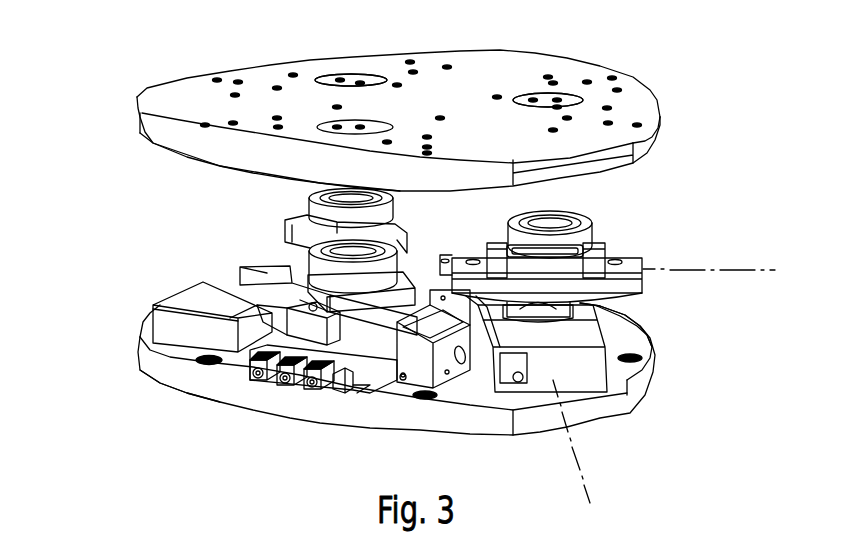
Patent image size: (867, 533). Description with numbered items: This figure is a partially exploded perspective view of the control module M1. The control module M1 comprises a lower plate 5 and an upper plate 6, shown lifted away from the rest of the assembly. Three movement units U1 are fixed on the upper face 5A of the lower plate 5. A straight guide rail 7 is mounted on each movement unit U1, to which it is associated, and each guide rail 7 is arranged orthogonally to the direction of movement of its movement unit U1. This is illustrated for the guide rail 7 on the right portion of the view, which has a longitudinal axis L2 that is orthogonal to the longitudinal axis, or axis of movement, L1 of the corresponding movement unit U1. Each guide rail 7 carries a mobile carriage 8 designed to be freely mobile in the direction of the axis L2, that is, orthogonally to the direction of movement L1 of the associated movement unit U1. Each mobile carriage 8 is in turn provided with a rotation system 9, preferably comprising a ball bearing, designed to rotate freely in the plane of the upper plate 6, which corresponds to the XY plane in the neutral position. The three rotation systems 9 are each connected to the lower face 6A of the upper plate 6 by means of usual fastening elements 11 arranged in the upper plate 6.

The lower plate 5 is at (640, 387).
The upper face of the lower plate 5A is at (623, 322).
The upper plate 6 is at (650, 142).
The lower face of the upper plate 6A is at (151, 155).
The straight guide rail 7 is at (632, 255).
The mobile carriage 8 is at (279, 210).
The rotation system 9 is at (482, 214).
The fastening element 11 is at (352, 69).
The longitudinal axis of the movement unit L1 is at (573, 458).
The longitudinal axis of the guide rail L2 is at (733, 268).
The control module M1 is at (107, 336).
The movement unit U1 is at (239, 255).